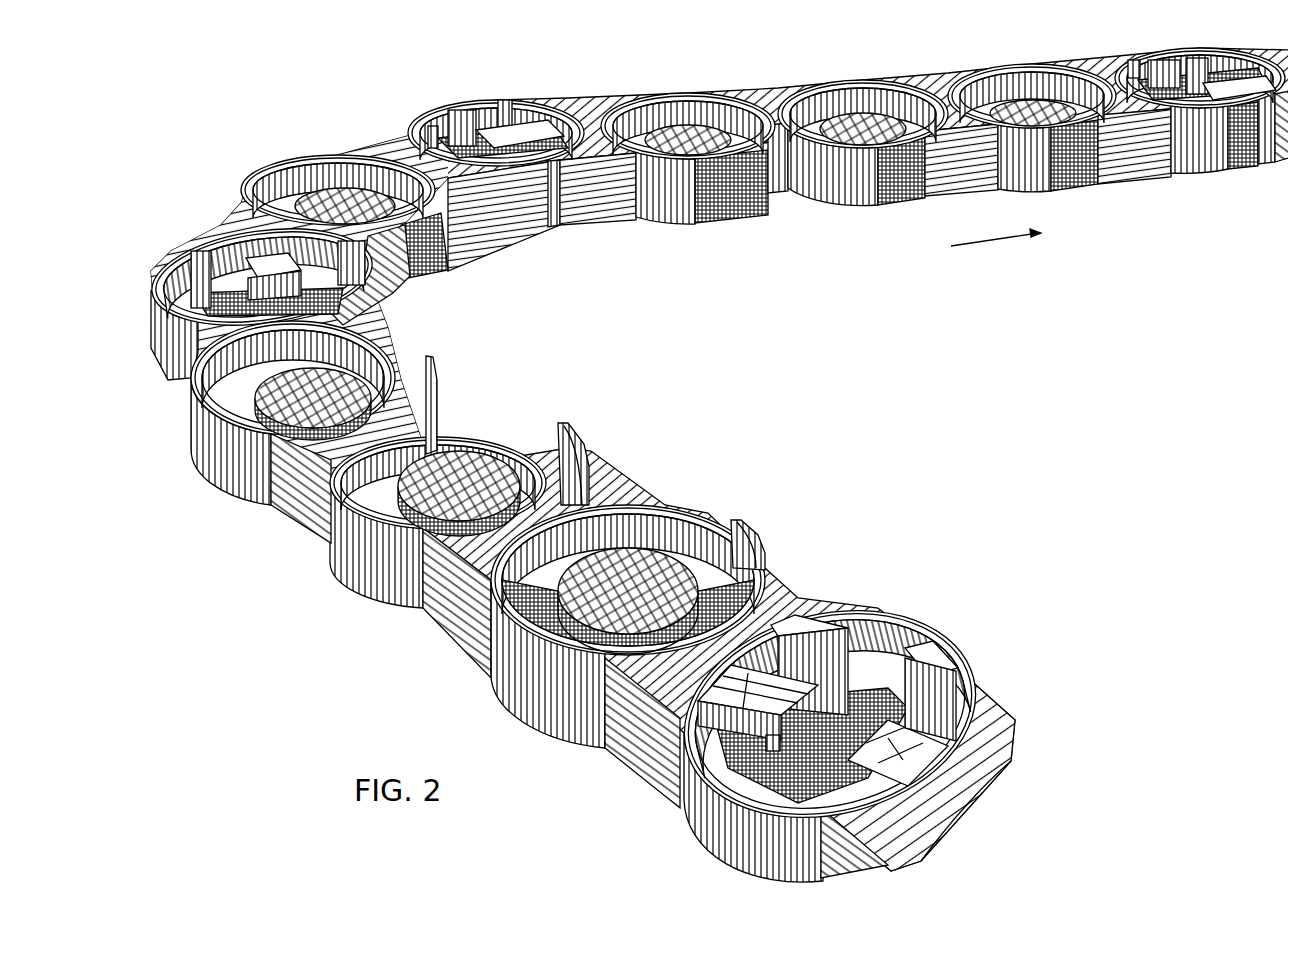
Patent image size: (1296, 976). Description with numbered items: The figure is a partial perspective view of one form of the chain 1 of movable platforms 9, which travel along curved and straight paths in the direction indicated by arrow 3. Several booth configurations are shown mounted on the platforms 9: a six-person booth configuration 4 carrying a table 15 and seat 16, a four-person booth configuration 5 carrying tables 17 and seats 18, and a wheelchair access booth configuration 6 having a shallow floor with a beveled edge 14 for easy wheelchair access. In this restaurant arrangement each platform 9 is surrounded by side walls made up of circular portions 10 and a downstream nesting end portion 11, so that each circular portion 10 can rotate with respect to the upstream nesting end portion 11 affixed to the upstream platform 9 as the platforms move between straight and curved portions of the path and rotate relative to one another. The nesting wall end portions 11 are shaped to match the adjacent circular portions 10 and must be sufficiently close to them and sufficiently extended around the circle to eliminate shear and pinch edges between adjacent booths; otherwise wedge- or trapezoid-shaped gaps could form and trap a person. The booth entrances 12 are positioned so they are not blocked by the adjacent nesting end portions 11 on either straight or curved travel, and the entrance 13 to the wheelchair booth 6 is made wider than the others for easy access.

The chain 1 is at (788, 373).
The arrow 3 is at (975, 237).
The six-person booth configuration 4 is at (527, 713).
The four-person booth configuration 5 is at (700, 847).
The wheelchair access booth configuration 6 is at (393, 603).
The platform 9 is at (655, 76).
The circular portion 10 is at (750, 540).
The downstream nesting end portion 11 is at (613, 458).
The booth entrance 12 is at (703, 518).
The entrance 13 is at (683, 193).
The beveled edge 14 is at (776, 197).
The table 15 is at (667, 552).
The seat 16 is at (636, 512).
The tables 17 is at (765, 683).
The seats 18 is at (820, 677).